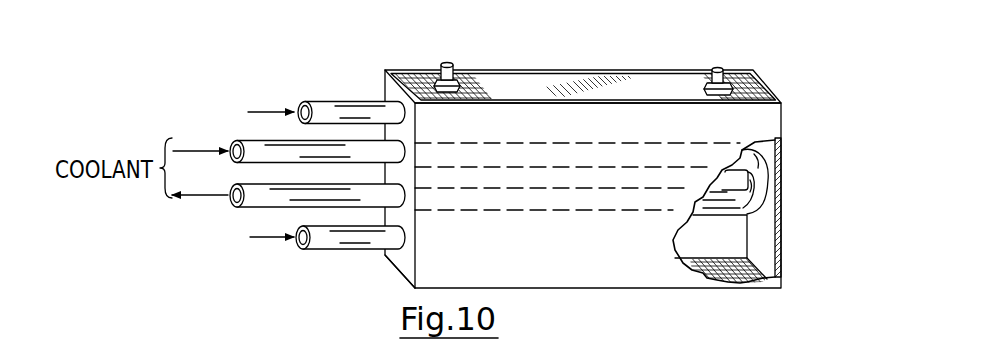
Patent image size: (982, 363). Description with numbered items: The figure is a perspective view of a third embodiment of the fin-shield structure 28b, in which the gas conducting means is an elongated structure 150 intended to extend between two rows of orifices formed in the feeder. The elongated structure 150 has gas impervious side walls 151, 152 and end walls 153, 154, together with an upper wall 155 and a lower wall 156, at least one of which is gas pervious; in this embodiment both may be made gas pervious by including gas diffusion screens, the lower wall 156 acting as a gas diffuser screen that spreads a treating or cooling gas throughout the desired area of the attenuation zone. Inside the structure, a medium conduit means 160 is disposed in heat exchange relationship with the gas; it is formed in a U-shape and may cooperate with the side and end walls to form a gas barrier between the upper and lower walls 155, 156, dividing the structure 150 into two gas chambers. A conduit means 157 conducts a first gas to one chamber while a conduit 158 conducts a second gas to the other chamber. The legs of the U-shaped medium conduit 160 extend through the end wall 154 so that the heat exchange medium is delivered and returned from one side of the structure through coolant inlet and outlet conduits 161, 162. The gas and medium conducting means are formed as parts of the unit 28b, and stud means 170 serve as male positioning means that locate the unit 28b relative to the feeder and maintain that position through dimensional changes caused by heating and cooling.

The shield structure 28b is at (765, 80).
The elongated structure 150 is at (792, 213).
The side wall 151 is at (598, 272).
The side wall 152 is at (722, 237).
The end wall 153 is at (783, 178).
The end wall 154 is at (398, 257).
The upper wall 155 is at (585, 90).
The lower wall 156 is at (752, 262).
The conduit means 157 is at (353, 100).
The conduit 158 is at (325, 249).
The medium conduit means 160 is at (778, 139).
The coolant inlet conduit 161 is at (245, 140).
The coolant outlet conduit 162 is at (250, 209).
The stud means 170 is at (448, 65).